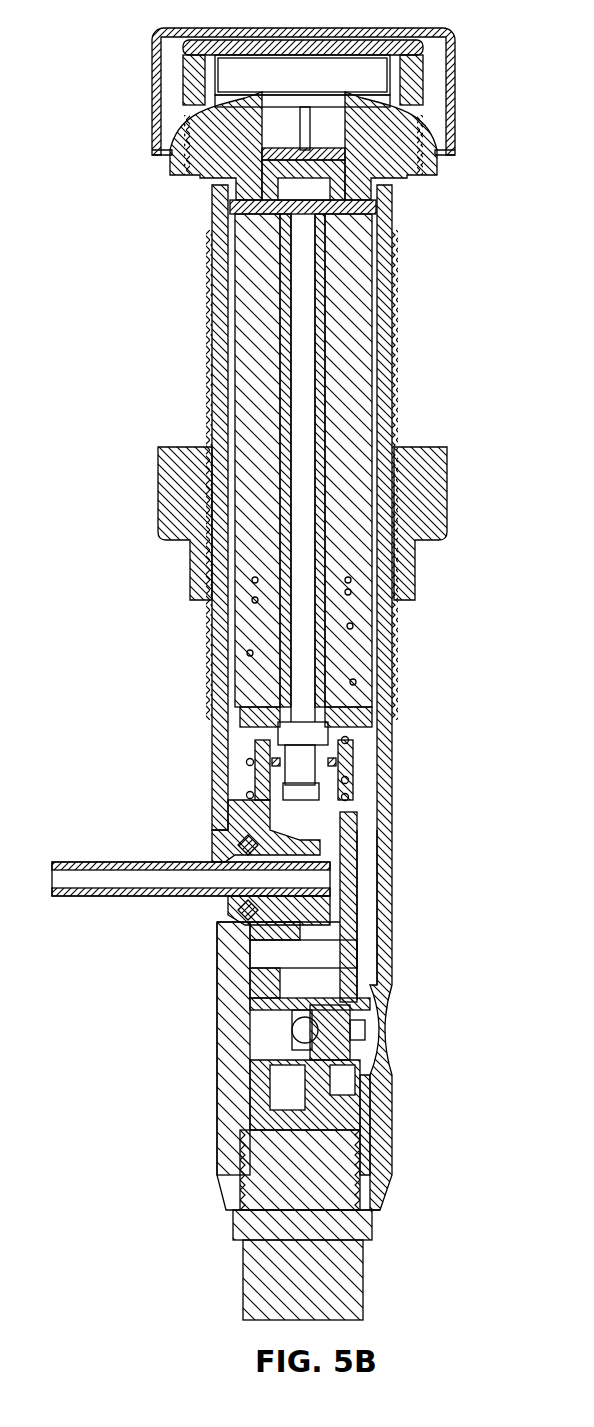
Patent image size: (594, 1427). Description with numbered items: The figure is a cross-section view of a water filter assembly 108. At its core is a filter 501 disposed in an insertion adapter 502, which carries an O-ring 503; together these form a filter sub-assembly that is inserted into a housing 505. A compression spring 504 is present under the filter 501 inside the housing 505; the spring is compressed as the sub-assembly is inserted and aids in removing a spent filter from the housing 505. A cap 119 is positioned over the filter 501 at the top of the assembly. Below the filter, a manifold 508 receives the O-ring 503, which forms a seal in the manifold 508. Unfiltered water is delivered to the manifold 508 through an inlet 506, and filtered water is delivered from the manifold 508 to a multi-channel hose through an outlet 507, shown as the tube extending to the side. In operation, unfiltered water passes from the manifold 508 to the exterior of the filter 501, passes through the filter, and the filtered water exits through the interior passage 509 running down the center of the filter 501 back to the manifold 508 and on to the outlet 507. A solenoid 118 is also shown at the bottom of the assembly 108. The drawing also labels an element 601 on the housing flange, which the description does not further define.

The water filter assembly 108 is at (140, 57).
The cap 119 is at (455, 33).
The filter 501 is at (358, 322).
The insertion adapter 502 is at (393, 700).
The O-ring 503 is at (255, 755).
The compression spring 504 is at (248, 794).
The housing 505 is at (212, 385).
The inlet 506 is at (386, 1030).
The outlet 507 is at (50, 878).
The manifold 508 is at (374, 887).
The interior passage 509 is at (305, 422).
The flange 601 is at (223, 523).
The solenoid 118 is at (352, 1310).